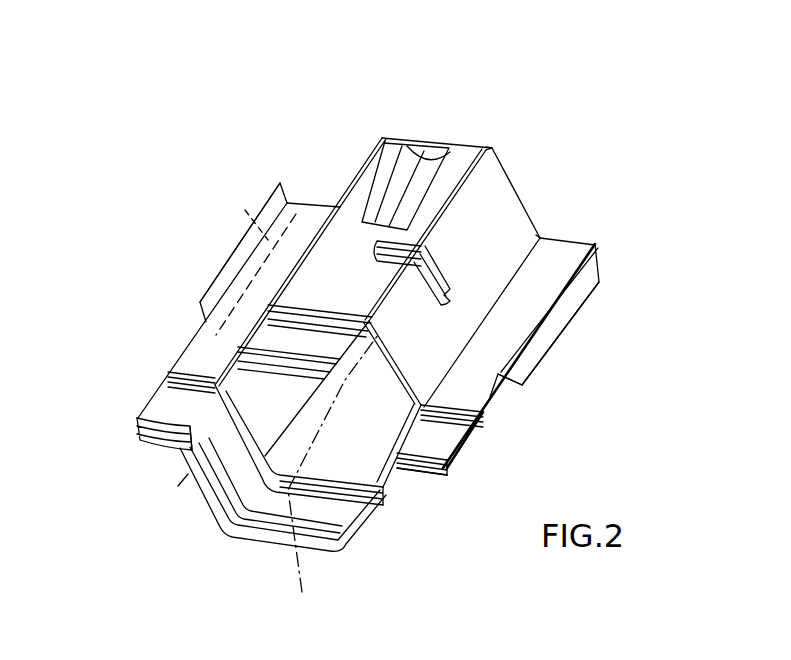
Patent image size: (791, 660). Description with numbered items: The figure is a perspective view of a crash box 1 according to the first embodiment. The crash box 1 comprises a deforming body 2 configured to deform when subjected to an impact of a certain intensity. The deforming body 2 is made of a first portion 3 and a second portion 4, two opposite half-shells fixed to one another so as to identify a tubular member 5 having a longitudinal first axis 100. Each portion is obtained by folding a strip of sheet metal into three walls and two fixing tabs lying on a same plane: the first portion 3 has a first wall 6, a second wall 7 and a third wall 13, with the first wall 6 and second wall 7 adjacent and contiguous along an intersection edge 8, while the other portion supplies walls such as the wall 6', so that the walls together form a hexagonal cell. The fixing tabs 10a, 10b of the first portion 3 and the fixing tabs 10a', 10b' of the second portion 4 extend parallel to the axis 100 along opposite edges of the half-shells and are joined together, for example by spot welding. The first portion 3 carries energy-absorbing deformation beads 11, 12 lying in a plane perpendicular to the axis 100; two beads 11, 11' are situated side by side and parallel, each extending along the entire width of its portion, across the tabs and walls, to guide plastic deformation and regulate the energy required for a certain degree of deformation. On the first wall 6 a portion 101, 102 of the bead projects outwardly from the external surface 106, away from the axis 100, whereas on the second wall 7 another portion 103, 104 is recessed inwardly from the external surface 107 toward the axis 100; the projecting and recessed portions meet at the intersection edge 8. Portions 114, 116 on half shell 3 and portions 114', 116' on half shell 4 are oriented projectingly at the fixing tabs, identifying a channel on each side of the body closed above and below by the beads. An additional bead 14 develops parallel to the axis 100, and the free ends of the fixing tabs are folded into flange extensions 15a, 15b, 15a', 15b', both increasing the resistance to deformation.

The crash box 1 is at (212, 208).
The deforming body 2 is at (252, 165).
The first portion 3 is at (519, 185).
The second portion 4 is at (178, 472).
The tubular member 5 is at (335, 150).
The first wall 6 is at (428, 197).
The wall of the other body portion 6' is at (318, 451).
The second wall 7 is at (533, 220).
The intersection edge 8 is at (495, 148).
The fixing tab 10a is at (212, 310).
The fixing tab 10a' is at (116, 444).
The fixing tab 10b is at (551, 389).
The fixing tab 10b' is at (422, 505).
The energy-absorbing deformation bead 11 is at (480, 460).
The energy-absorbing deformation bead 11' is at (153, 386).
The energy-absorbing deformation bead 12 is at (446, 310).
The third wall 13 is at (206, 514).
The additional bead 14 is at (411, 174).
The folded flange extension 15a is at (224, 242).
The folded flange extension 15a' is at (256, 259).
The folded flange extension 15b is at (561, 338).
The folded flange extension 15b' is at (597, 330).
The longitudinal first axis 100 is at (333, 471).
The projecting portion of the bead 101 is at (314, 305).
The projecting portion of the bead 102 is at (373, 257).
The recessed portion of the bead 103 is at (390, 473).
The recessed portion of the bead 104 is at (451, 279).
The external surface of the first wall 106 is at (450, 152).
The external surface of the second wall 107 is at (542, 235).
The bead portion 114 is at (120, 429).
The bead portion 114' is at (168, 500).
The bead portion 116 is at (450, 490).
The bead portion 116' is at (500, 438).